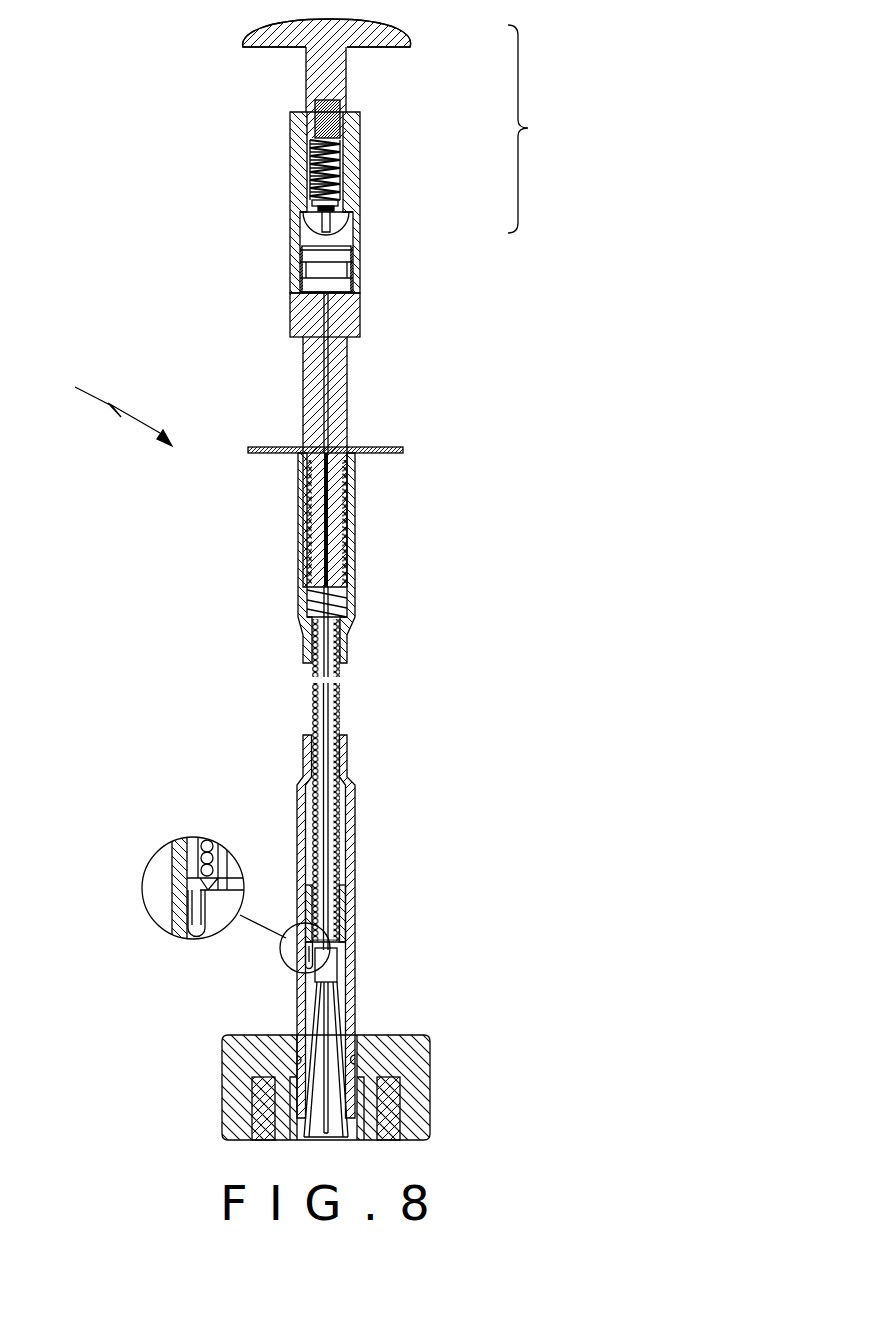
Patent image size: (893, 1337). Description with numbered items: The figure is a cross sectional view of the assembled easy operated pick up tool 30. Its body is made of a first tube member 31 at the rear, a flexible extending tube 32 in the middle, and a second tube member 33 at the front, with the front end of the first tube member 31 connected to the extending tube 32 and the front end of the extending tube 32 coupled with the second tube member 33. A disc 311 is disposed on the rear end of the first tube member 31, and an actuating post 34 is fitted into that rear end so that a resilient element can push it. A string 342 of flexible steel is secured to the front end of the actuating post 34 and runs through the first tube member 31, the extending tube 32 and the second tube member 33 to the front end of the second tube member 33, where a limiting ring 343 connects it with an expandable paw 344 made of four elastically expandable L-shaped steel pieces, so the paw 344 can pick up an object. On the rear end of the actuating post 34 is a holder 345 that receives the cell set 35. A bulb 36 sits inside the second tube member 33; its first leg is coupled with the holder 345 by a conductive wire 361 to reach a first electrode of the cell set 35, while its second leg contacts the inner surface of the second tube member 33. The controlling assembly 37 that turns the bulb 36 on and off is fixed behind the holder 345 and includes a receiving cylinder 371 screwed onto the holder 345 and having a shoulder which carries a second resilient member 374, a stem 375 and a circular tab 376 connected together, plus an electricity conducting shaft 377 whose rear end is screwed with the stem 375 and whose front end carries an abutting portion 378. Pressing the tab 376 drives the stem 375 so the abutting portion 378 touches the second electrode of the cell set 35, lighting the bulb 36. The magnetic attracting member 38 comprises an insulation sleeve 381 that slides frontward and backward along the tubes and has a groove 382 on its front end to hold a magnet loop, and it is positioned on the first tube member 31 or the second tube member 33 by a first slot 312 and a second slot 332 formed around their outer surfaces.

The easy operated pick up tool 30 is at (108, 404).
The first tube member 31 is at (298, 510).
The disc 311 is at (380, 454).
The first slot 312 is at (298, 588).
The flexible extending tube 32 is at (340, 702).
The second tube member 33 is at (352, 820).
The second slot 332 is at (355, 1060).
The actuating post 34 is at (340, 395).
The string 342 is at (327, 725).
The limiting ring 343 is at (330, 971).
The expandable paw 344 is at (335, 1013).
The holder 345 is at (350, 318).
The cell set 35 is at (308, 271).
The bulb 36 is at (192, 905).
The conductive wire 361 is at (312, 723).
The controlling assembly 37 is at (537, 129).
The receiving cylinder 371 is at (358, 128).
The second resilient member 374 is at (340, 157).
The stem 375 is at (342, 86).
The circular tab 376 is at (407, 44).
The electricity conducting shaft 377 is at (342, 185).
The abutting portion 378 is at (338, 220).
The magnetic attracting member 38 is at (392, 1115).
The insulation sleeve 381 is at (430, 1070).
The groove 382 is at (295, 1062).